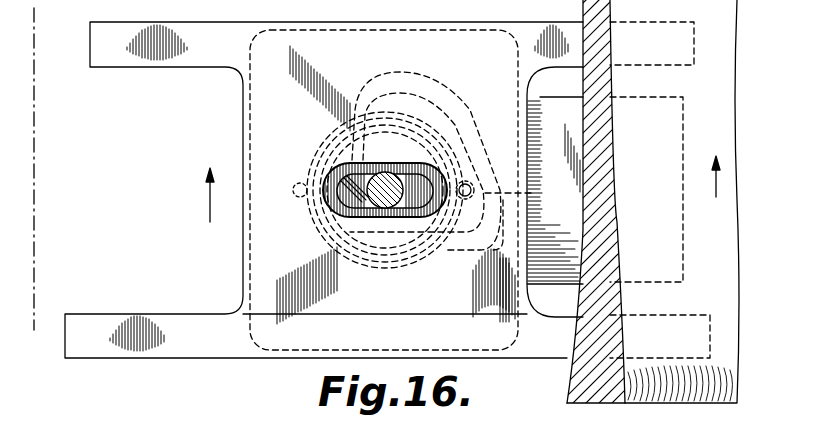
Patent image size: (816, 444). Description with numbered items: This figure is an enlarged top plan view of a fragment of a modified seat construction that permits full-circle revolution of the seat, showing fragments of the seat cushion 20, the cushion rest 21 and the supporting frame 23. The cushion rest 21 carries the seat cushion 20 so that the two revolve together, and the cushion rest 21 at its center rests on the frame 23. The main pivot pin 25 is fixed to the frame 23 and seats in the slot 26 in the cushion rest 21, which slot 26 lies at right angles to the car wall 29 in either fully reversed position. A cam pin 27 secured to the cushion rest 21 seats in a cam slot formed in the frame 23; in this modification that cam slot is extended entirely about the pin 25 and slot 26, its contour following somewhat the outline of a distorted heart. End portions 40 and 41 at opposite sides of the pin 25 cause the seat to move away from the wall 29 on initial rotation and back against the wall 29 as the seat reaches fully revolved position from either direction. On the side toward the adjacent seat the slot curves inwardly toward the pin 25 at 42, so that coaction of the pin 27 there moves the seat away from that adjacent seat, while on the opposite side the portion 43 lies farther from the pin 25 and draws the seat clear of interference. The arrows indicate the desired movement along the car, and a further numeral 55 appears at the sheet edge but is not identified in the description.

The seat cushion 20 is at (677, 395).
The cushion rest 21 is at (278, 118).
The frame 23 is at (565, 267).
The main pivot pin 25 is at (403, 167).
The slot 26 is at (423, 213).
The cam pin 27 is at (470, 186).
The car wall 29 is at (36, 255).
The end portion of slot 40 is at (528, 195).
The end portion of slot 41 is at (305, 198).
The inwardly curved slot portion 42 is at (390, 247).
The outer slot portion 43 is at (429, 77).
The panel section 55 is at (194, 437).